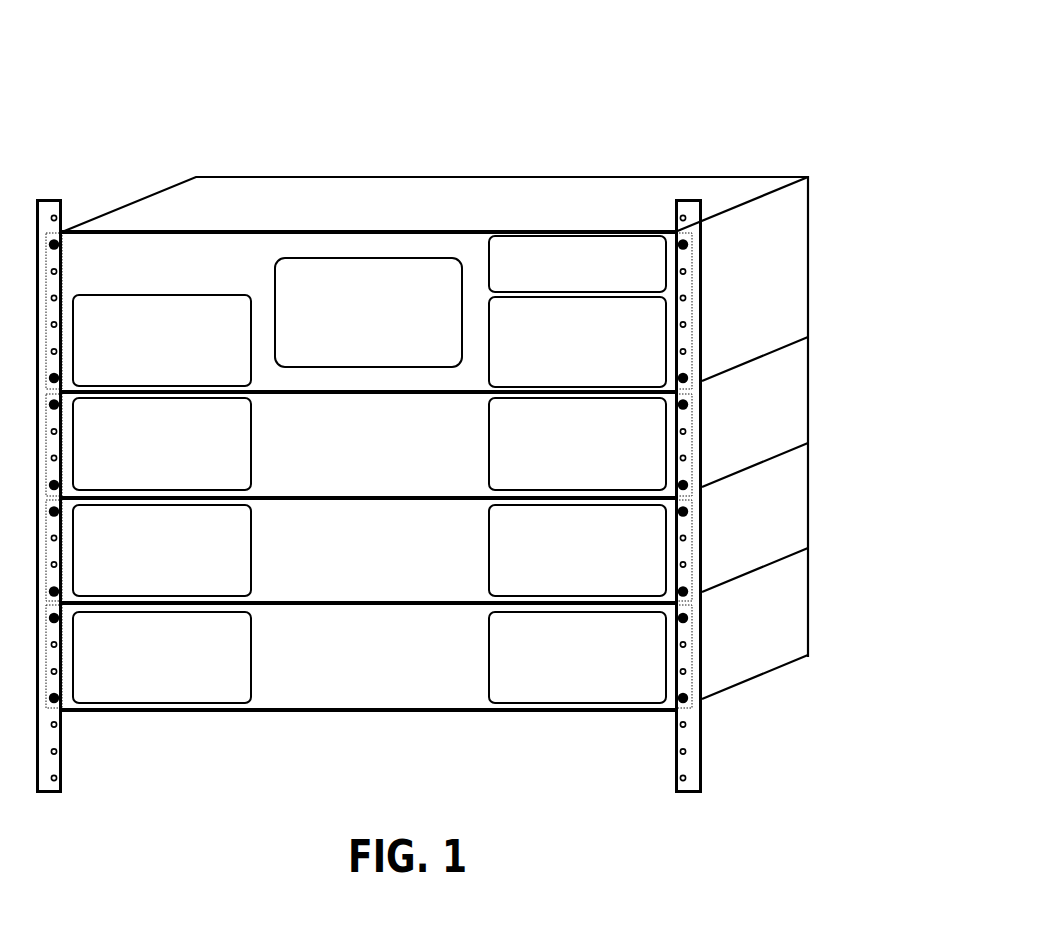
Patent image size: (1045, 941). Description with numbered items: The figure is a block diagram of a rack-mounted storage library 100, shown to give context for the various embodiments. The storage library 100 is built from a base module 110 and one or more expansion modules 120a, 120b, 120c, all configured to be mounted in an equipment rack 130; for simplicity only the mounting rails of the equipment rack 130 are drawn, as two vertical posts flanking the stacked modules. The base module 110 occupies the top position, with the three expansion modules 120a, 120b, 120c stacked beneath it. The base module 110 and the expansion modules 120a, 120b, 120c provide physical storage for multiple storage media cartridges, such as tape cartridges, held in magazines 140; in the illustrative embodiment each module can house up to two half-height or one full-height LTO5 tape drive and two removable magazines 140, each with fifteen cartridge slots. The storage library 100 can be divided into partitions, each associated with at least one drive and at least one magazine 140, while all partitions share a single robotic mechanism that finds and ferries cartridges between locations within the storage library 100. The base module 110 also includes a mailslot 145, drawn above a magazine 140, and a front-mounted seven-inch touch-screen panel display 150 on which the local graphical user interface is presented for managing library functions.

The rack-mounted storage library 100 is at (624, 58).
The base module 110 is at (255, 276).
The expansion module 120a is at (392, 482).
The expansion module 120b is at (392, 588).
The expansion module 120c is at (392, 693).
The equipment rack 130 is at (702, 761).
The magazine 140 is at (595, 363).
The mailslot 145 is at (640, 273).
The touch-screen panel display 150 is at (385, 333).